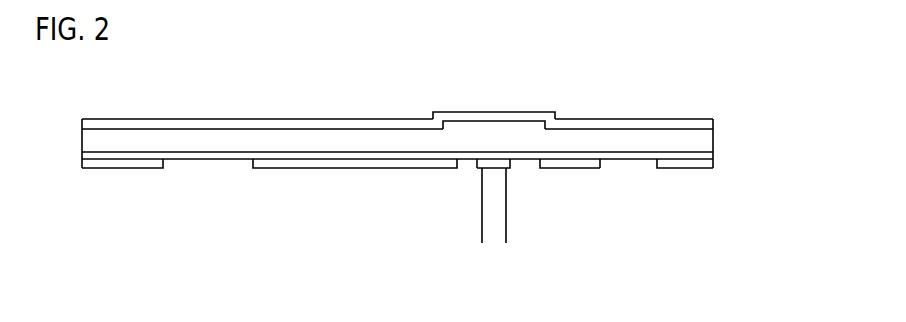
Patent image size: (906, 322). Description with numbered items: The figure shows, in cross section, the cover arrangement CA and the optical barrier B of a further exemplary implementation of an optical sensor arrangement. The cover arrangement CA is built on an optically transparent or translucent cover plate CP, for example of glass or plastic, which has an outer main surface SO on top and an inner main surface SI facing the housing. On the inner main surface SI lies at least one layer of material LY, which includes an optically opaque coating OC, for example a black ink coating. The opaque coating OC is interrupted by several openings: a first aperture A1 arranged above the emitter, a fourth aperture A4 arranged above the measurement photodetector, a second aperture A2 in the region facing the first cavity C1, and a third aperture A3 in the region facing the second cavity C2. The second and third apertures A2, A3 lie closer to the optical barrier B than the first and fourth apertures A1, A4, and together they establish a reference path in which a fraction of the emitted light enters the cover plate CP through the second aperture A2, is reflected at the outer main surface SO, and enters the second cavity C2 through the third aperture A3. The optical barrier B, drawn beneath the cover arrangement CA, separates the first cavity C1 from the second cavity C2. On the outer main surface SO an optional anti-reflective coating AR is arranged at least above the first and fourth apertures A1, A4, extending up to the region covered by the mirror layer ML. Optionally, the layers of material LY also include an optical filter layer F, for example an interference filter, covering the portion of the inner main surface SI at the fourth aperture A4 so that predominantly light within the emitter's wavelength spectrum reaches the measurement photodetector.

The cover arrangement CA is at (376, 143).
The cover plate CP is at (397, 141).
The outer main surface SO is at (235, 128).
The mirror layer ML is at (495, 127).
The anti-reflective coating AR is at (325, 123).
The inner main surface SI is at (237, 153).
The optical filter layer F is at (183, 157).
The optically opaque coating OC is at (115, 160).
The fourth aperture A4 is at (243, 163).
The third aperture A3 is at (463, 170).
The optical barrier B is at (493, 201).
The second aperture A2 is at (520, 168).
The first aperture A1 is at (647, 165).
The layer of material LY is at (717, 162).
The second cavity C2 is at (363, 235).
The first cavity C1 is at (572, 248).